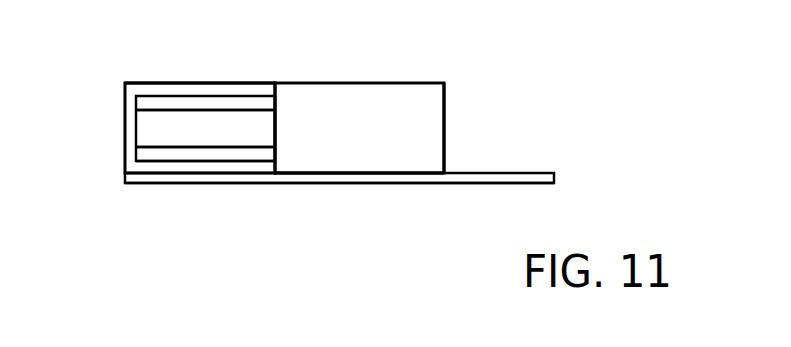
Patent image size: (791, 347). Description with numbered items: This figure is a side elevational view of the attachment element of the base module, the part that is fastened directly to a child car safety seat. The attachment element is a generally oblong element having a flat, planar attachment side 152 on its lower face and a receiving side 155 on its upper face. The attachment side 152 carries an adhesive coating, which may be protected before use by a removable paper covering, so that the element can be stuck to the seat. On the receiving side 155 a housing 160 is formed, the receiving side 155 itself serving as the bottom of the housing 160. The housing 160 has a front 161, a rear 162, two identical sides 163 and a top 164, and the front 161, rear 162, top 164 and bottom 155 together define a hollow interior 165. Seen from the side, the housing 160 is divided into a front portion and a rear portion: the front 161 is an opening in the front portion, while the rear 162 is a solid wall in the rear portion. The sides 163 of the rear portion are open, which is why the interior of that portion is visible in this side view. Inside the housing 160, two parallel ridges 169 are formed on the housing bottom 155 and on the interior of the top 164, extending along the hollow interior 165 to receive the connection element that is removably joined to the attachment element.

The attachment side 152 is at (467, 183).
The receiving side 155 is at (515, 173).
The housing 160 is at (366, 83).
The front 161 is at (447, 105).
The rear 162 is at (125, 91).
The sides 163 is at (170, 138).
The top 164 is at (215, 83).
The hollow interior 165 is at (165, 123).
The parallel ridges 169 is at (207, 110).